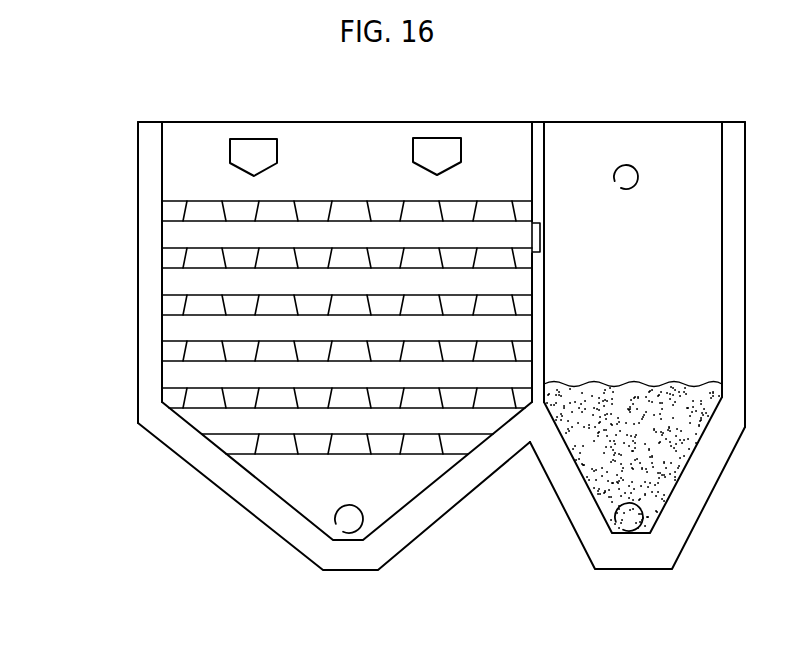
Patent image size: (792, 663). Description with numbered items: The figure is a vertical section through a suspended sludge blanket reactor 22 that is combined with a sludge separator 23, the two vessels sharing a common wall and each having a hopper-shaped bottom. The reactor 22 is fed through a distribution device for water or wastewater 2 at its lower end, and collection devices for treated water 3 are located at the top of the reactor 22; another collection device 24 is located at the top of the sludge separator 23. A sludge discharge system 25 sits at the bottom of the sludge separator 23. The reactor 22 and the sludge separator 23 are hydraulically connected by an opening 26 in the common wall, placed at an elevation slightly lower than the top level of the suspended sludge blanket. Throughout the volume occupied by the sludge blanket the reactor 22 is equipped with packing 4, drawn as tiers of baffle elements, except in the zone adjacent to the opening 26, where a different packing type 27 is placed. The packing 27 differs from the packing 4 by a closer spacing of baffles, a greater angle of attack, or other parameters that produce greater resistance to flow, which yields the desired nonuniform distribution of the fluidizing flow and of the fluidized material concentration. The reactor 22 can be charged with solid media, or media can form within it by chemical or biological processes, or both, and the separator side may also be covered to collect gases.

The distribution device for water or wastewater 2 is at (352, 513).
The collection devices for treated water 3 is at (430, 157).
The packing 4 is at (245, 442).
The suspended sludge blanket reactor 22 is at (433, 505).
The sludge separator 23 is at (687, 512).
The collection device 24 is at (623, 167).
The sludge discharge system 25 is at (630, 523).
The opening 26 is at (537, 236).
The packing type 27 is at (445, 257).